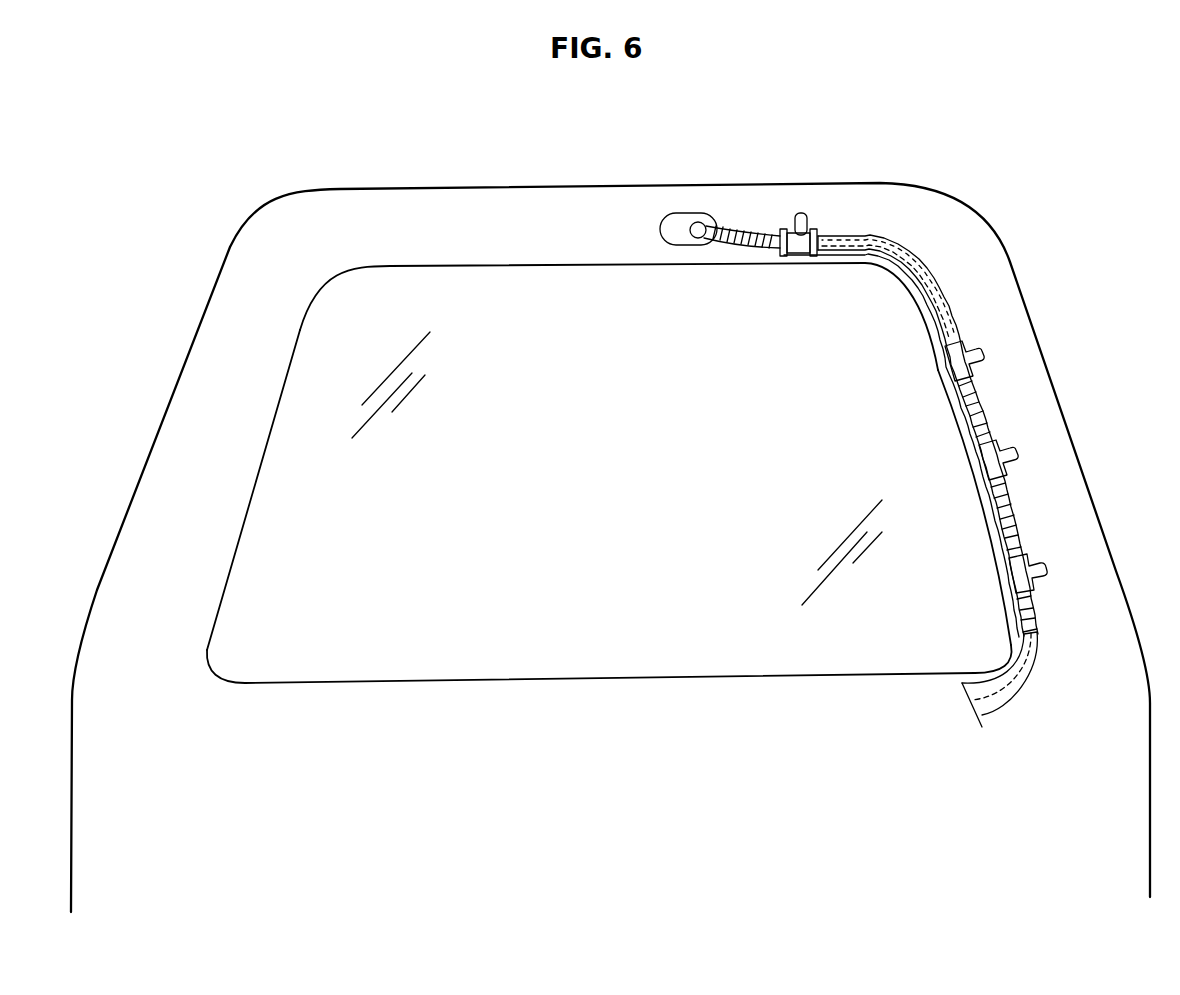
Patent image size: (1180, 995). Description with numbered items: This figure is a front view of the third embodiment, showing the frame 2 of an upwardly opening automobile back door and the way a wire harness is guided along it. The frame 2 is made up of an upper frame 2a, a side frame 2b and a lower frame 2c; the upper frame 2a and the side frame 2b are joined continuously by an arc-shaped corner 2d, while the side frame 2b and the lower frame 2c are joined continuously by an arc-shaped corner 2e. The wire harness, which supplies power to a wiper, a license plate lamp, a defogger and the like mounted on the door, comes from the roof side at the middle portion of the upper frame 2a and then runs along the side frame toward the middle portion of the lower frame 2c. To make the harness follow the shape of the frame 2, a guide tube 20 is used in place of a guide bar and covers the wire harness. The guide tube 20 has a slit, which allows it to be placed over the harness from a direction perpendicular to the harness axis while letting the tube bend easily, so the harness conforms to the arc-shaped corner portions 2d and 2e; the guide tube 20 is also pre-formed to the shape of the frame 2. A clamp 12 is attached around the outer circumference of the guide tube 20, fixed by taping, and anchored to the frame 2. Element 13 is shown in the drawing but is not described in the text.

The frame 2 is at (178, 373).
The upper frame 2a is at (577, 243).
The side frame 2b is at (1052, 477).
The lower frame 2c is at (567, 692).
The arc-shaped corner 2d is at (907, 237).
The arc-shaped corner 2e is at (1040, 677).
The clamp 12 is at (808, 213).
The fixing rail 13 is at (781, 257).
The guide tube 20 is at (930, 262).